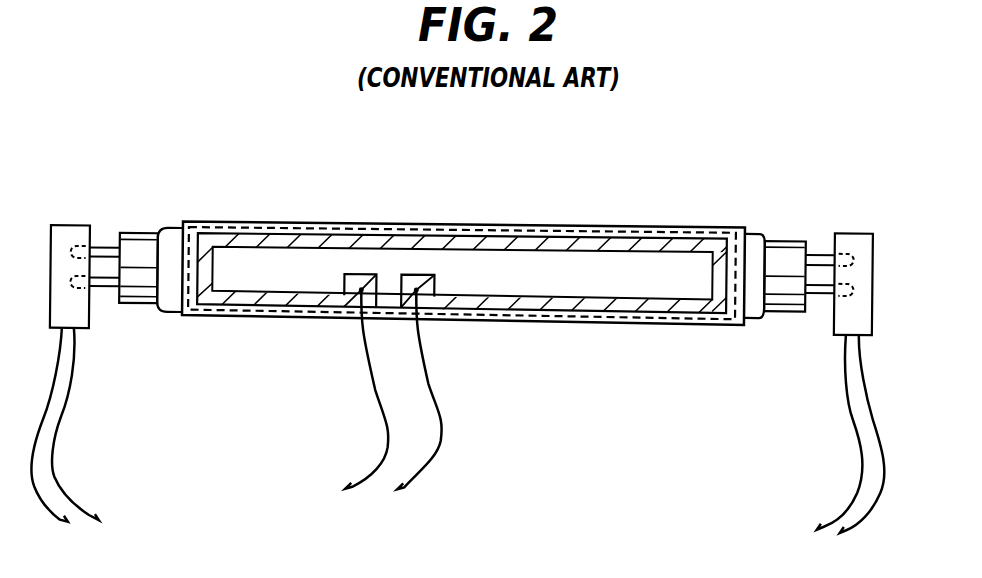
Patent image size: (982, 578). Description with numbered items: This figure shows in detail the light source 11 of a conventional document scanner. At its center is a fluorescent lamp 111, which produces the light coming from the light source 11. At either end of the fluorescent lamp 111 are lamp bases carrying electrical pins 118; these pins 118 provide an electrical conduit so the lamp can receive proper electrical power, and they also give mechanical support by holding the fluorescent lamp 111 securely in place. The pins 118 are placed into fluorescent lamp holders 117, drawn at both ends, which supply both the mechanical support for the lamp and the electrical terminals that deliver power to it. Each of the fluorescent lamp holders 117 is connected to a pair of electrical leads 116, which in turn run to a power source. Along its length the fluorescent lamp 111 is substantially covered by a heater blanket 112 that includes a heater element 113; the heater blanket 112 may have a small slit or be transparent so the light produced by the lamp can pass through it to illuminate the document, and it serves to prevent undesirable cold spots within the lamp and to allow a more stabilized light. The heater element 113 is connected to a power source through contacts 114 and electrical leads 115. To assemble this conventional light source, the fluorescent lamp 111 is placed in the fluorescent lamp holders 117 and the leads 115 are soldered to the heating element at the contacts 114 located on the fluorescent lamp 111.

The light source 11 is at (681, 179).
The fluorescent lamp 111 is at (168, 234).
The heater blanket 112 is at (248, 225).
The heater element 113 is at (370, 232).
The contacts 114 is at (417, 290).
The electrical leads 115 is at (443, 427).
The electrical leads 116 is at (66, 417).
The fluorescent lamp holders 117 is at (62, 224).
The electrical pins 118 is at (98, 288).